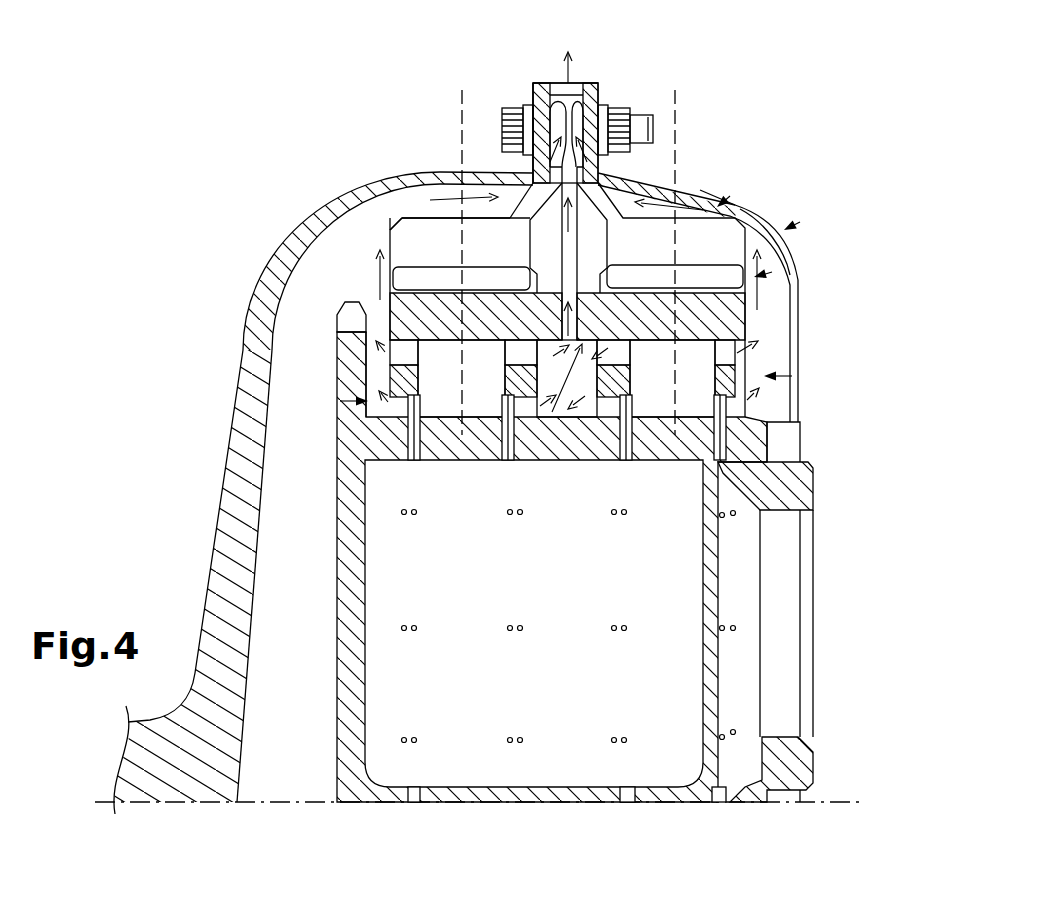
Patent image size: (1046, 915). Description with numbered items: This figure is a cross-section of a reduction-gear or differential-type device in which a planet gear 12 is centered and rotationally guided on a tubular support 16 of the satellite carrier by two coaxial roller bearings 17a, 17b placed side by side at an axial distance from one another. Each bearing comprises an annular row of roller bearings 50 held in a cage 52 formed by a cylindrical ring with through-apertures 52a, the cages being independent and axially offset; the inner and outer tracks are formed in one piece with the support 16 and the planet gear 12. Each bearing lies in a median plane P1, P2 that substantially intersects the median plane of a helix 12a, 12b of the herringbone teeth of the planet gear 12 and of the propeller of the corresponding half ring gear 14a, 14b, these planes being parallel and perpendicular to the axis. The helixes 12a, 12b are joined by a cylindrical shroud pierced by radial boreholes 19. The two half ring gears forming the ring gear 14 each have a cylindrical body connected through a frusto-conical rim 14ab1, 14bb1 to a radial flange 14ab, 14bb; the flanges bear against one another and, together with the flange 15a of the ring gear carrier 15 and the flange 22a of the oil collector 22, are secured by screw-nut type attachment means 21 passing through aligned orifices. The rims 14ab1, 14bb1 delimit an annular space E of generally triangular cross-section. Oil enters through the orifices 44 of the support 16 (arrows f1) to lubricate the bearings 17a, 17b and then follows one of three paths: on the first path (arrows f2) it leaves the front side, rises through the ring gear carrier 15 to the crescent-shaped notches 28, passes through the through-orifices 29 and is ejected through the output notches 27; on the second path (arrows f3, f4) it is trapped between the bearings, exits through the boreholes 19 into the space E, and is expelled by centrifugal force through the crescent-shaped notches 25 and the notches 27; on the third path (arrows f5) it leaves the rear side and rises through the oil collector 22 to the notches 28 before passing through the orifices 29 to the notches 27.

The planet gear 12 is at (784, 272).
The helix of the herringbone teeth 12a is at (366, 328).
The helix of the herringbone teeth 12b is at (703, 305).
The ring gear 14 is at (730, 196).
The half ring gear 14a is at (428, 233).
The half ring gear 14b is at (700, 237).
The annular flange 14ab is at (533, 137).
The annular rim 14ab1 is at (395, 186).
The annular flange 14bb is at (645, 175).
The annular rim 14bb1 is at (695, 190).
The ring gear carrier 15 is at (393, 177).
The annular flange 15a is at (540, 88).
The tubular support 16 is at (780, 482).
The row of rolling elements 17a is at (356, 402).
The row of rolling elements 17b is at (792, 376).
The radial boreholes 19 is at (398, 275).
The attachment means 21 is at (532, 100).
The oil collector 22 is at (800, 222).
The flange of the oil collector 22a is at (583, 83).
The crescent-shaped notches 25 is at (560, 83).
The notches for the output of oil 27 is at (577, 83).
The crescent-shaped notches 28 is at (535, 132).
The through-orifices 29 is at (606, 132).
The orifices 44 is at (508, 462).
The roller bearings 50 is at (705, 320).
The cage 52 is at (745, 383).
The through-apertures 52a is at (705, 366).
The annular space E is at (573, 253).
The median plane P1 is at (462, 100).
The median plane P2 is at (676, 100).
The arrows f1 is at (372, 455).
The arrows f2 is at (530, 175).
The arrows f3 is at (580, 430).
The arrows f4 is at (556, 267).
The arrows f5 is at (655, 195).